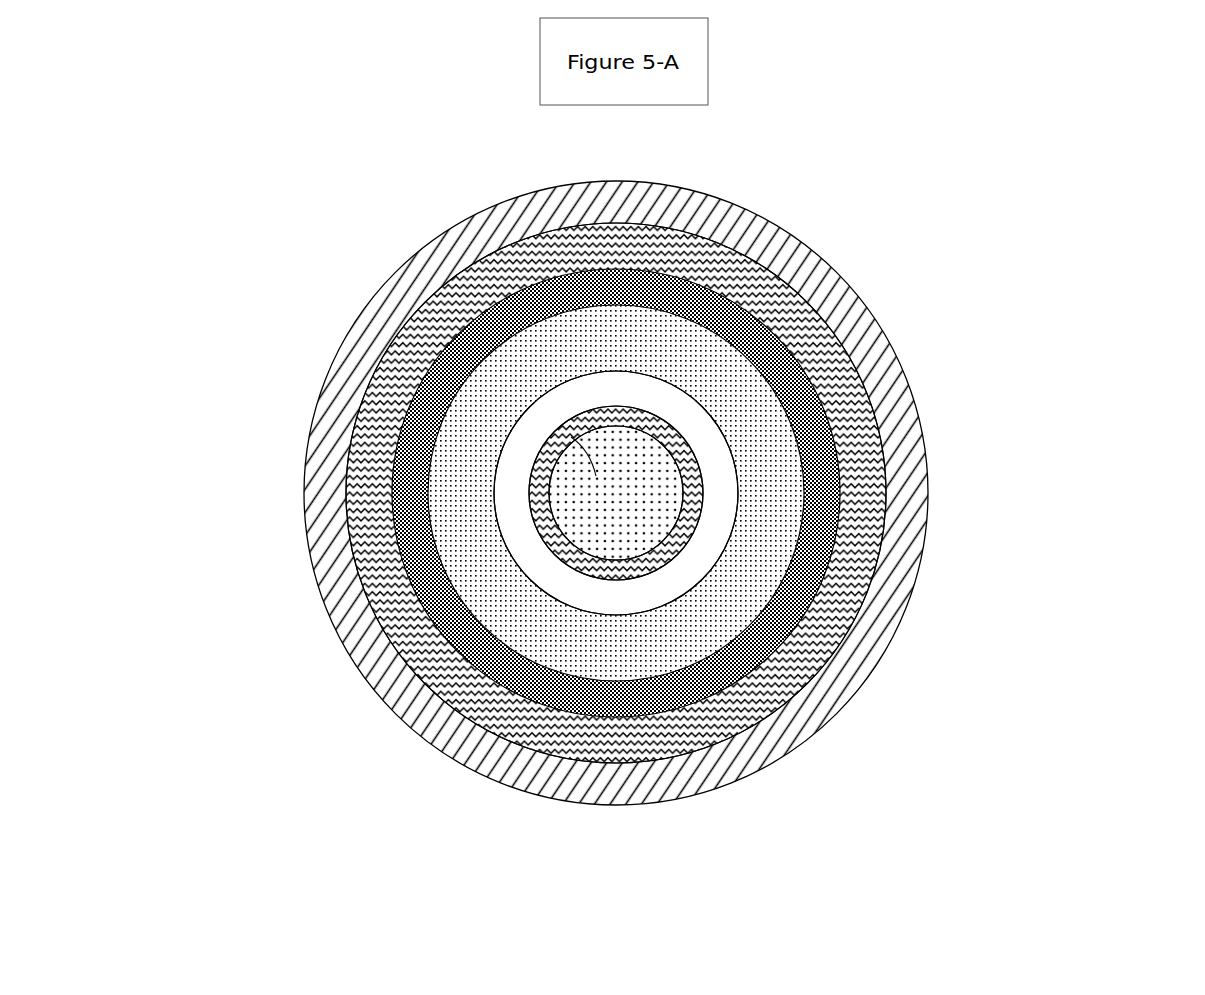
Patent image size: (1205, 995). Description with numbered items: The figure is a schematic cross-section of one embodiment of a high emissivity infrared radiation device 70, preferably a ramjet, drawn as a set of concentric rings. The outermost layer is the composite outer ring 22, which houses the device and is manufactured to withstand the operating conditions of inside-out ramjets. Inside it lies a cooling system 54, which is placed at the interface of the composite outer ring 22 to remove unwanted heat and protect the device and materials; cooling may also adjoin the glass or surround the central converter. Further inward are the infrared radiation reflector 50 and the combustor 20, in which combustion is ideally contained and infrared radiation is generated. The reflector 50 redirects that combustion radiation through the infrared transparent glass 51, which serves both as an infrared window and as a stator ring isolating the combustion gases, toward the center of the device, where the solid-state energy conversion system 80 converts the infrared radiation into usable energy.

The high emissivity infrared radiation device 70 is at (725, 454).
The composite outer ring 22 is at (327, 437).
The infrared transparent glass 51 is at (830, 330).
The infrared radiation reflector 50 is at (887, 447).
The cooling system 54 is at (530, 530).
The combustor 20 is at (750, 575).
The solid-state energy conversion system 80 is at (562, 423).